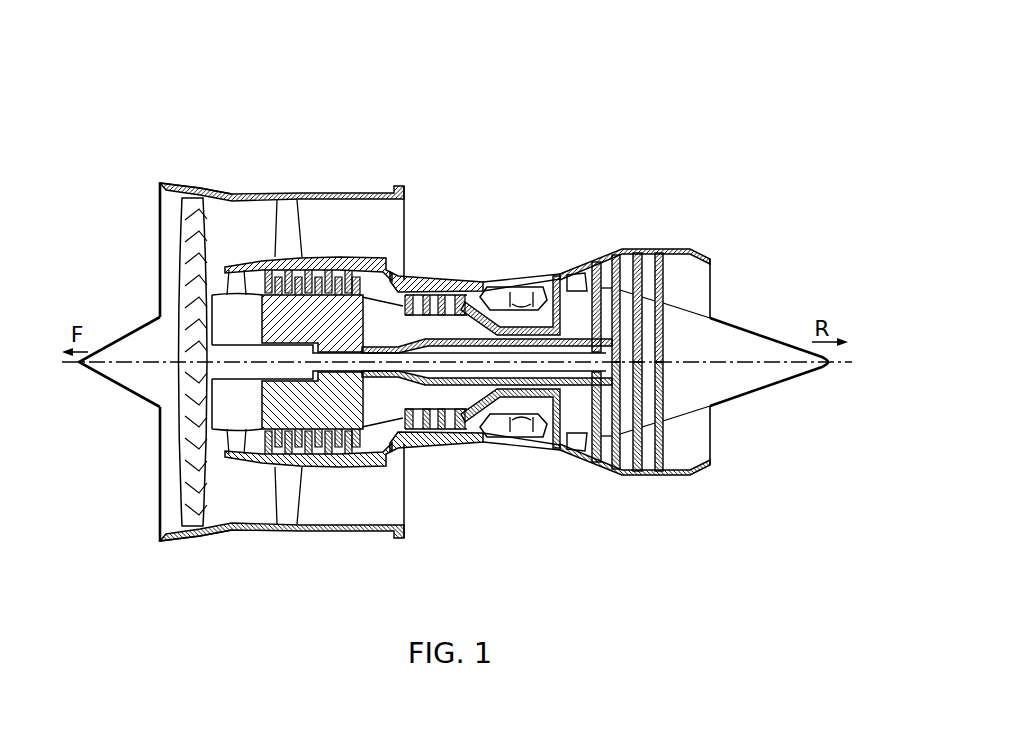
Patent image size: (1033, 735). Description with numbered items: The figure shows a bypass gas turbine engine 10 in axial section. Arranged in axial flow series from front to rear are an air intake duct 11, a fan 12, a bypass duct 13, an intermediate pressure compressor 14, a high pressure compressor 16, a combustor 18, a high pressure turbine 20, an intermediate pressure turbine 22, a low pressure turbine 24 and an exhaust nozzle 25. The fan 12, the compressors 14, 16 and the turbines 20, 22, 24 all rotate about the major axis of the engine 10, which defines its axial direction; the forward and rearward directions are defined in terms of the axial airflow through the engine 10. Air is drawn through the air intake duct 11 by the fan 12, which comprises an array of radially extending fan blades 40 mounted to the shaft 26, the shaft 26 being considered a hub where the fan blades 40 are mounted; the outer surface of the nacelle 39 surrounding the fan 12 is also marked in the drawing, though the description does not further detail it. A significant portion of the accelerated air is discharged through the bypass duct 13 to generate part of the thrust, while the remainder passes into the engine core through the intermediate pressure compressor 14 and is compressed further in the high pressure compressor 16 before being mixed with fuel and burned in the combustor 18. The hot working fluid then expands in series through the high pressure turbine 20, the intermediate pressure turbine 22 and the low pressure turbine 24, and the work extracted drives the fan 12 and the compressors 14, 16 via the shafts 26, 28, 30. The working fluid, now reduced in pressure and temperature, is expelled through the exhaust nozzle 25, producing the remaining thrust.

The gas turbine engine 10 is at (599, 82).
The air intake duct 11 is at (170, 225).
The fan 12 is at (180, 276).
The bypass duct 13 is at (337, 235).
The intermediate pressure compressor 14 is at (262, 264).
The high pressure compressor 16 is at (448, 282).
The combustor 18 is at (522, 294).
The high pressure turbine 20 is at (560, 277).
The intermediate pressure turbine 22 is at (597, 262).
The low pressure turbine 24 is at (667, 249).
The exhaust nozzle 25 is at (675, 296).
The shaft 26 is at (223, 373).
The shaft 28 is at (453, 385).
The shaft 30 is at (520, 397).
The nacelle outer surface 39 is at (200, 554).
The fan blades 40 is at (188, 182).